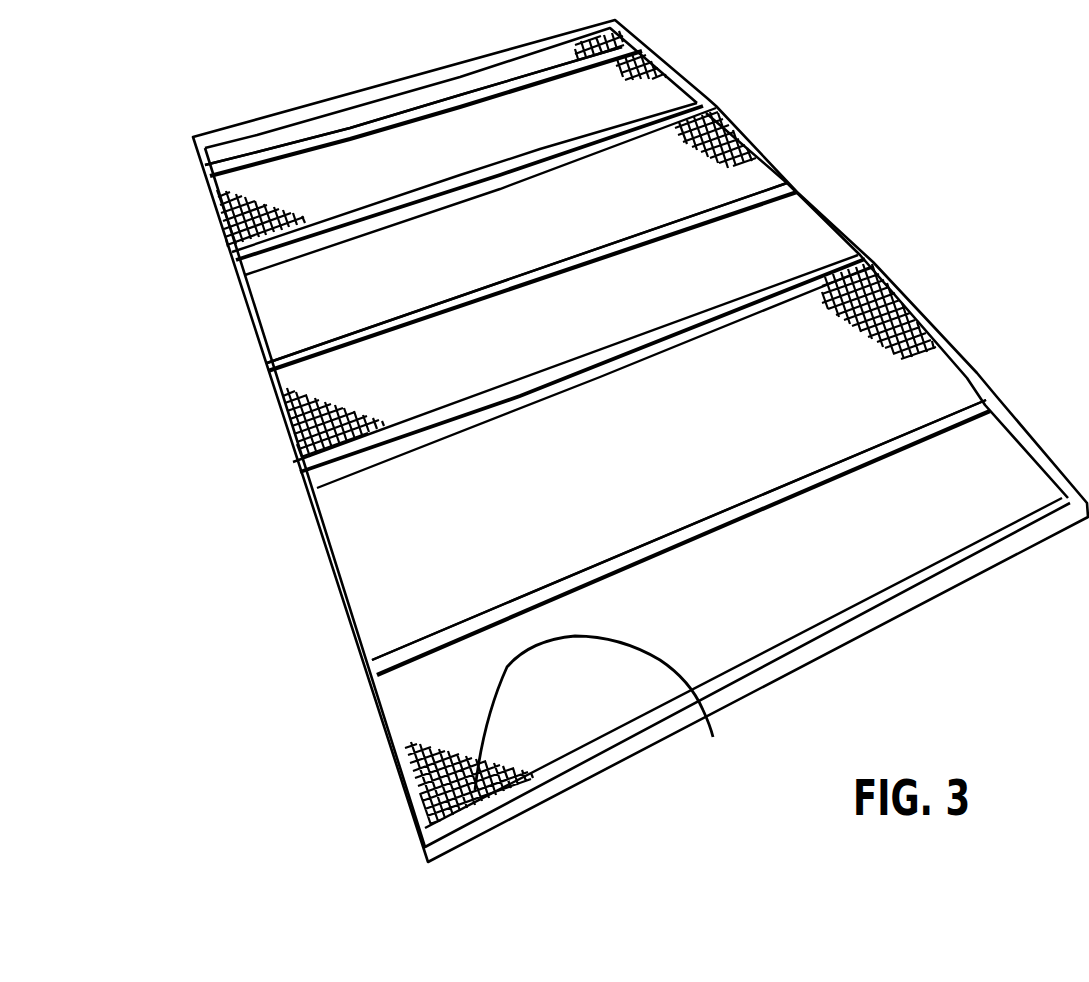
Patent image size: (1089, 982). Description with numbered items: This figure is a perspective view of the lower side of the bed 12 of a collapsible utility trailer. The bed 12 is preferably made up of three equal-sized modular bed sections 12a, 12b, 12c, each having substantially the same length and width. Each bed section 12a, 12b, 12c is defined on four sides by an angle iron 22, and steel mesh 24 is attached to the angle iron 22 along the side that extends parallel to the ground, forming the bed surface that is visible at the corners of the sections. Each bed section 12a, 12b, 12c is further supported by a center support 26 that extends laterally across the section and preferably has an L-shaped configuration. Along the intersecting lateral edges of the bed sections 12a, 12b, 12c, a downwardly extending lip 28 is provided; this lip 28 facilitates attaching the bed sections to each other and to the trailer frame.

The bed 12 is at (354, 736).
The bed section 12a is at (207, 198).
The bed section 12b is at (282, 428).
The bed section 12c is at (400, 777).
The angle iron 22 is at (345, 608).
The steel mesh 24 is at (713, 737).
The center support 26 is at (263, 157).
The downwardly extending lip 28 is at (230, 253).